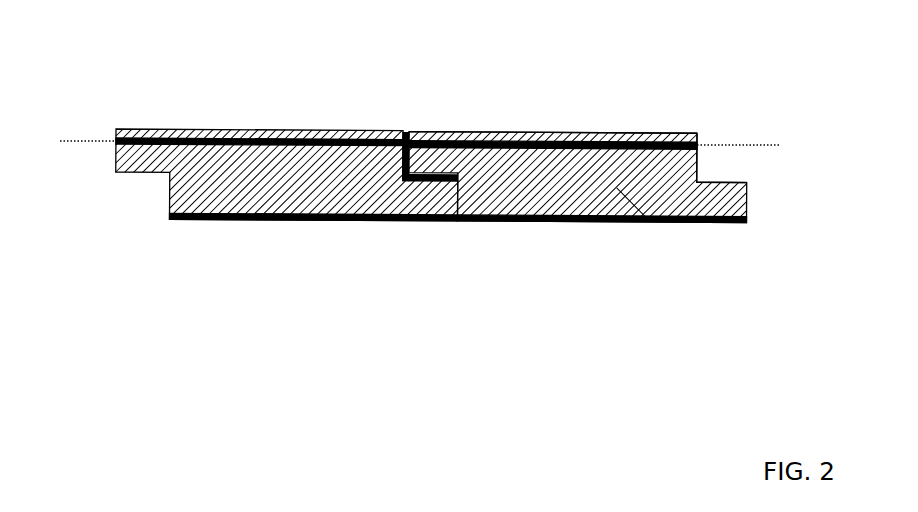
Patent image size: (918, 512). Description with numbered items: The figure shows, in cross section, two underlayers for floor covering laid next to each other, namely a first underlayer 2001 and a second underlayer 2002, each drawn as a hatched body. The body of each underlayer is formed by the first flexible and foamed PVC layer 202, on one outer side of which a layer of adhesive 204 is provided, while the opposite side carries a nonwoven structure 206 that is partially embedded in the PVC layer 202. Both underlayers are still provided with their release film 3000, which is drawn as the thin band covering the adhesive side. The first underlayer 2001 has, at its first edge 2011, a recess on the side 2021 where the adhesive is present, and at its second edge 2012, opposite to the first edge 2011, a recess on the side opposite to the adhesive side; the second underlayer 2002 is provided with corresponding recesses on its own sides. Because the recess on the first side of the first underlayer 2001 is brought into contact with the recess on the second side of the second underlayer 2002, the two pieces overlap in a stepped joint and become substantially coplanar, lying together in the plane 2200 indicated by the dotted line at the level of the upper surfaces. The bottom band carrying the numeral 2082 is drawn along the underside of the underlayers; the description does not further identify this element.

The underlayer 2002 is at (285, 90).
The underlayer 2001 is at (485, 88).
The second edge 2012 is at (437, 110).
The plane 2200 is at (97, 140).
The release film 3000 is at (176, 137).
The layer of adhesive 204 is at (634, 143).
The first edge 2011 is at (698, 163).
The side 2021 is at (740, 177).
The bottom layer of panel 2082 is at (508, 222).
The nonwoven structure 206 is at (590, 222).
The first flexible and foamed PVC layer 202 is at (640, 200).